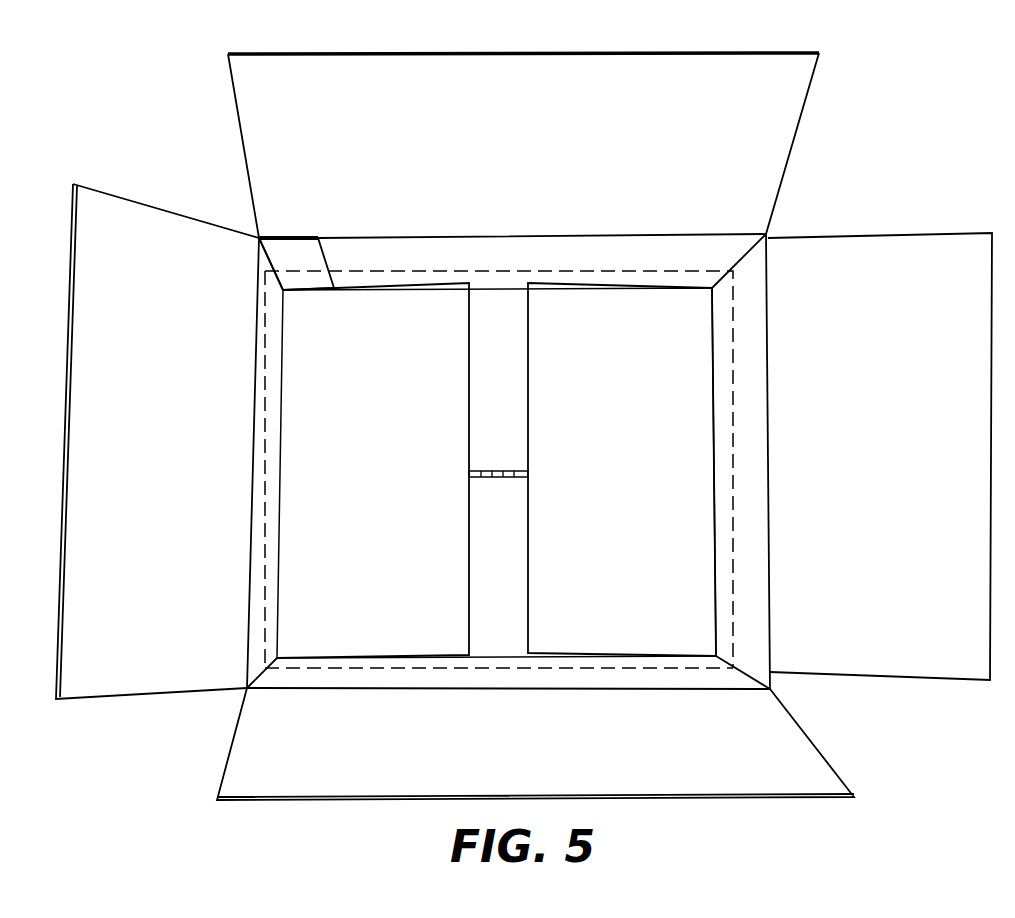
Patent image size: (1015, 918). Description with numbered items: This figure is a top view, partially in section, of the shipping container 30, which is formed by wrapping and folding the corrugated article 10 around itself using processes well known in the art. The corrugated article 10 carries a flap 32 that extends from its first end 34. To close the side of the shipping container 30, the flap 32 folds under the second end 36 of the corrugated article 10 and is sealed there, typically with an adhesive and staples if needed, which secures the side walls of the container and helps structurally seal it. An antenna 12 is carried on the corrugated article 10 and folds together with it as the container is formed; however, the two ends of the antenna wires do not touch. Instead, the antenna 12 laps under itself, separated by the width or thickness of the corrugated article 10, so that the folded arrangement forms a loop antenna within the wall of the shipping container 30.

The shipping container 30 is at (503, 78).
The corrugated article 10 is at (633, 412).
The antenna 12 is at (317, 669).
The second end 36 is at (259, 237).
The flap 32 is at (305, 255).
The first end 34 is at (265, 253).